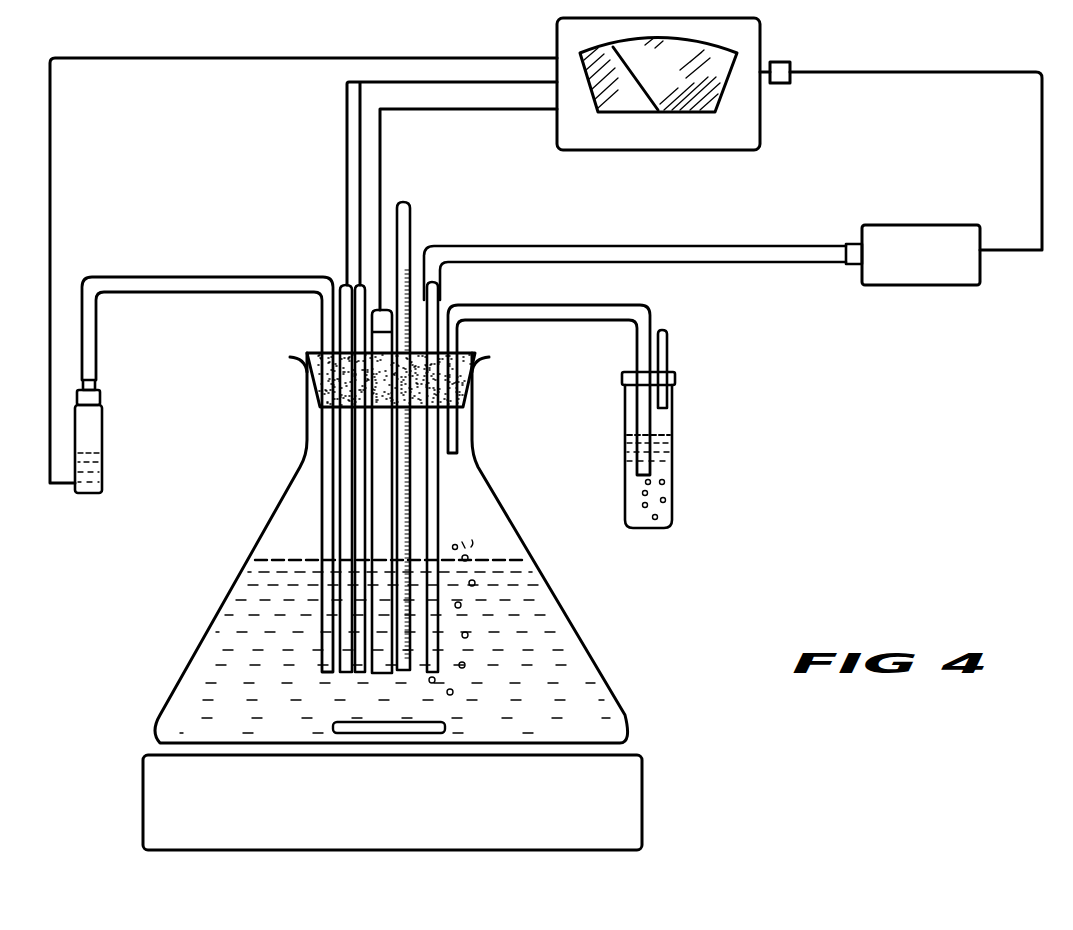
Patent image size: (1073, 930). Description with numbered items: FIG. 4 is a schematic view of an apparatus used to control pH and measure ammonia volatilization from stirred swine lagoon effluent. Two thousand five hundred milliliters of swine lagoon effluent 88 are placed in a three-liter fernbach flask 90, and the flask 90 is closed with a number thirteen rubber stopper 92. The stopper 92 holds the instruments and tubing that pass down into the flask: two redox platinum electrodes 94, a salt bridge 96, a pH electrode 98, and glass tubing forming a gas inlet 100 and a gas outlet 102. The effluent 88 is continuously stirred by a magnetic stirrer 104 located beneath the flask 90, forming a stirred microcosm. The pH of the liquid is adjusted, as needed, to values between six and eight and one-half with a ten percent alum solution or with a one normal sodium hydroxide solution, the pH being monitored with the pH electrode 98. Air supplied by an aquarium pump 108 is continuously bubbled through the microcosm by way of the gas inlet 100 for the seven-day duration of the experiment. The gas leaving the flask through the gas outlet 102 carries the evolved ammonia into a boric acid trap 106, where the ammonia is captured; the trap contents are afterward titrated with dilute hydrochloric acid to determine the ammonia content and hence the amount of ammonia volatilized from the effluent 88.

The swine lagoon effluent 88 is at (492, 645).
The fernbach flask 90 is at (507, 513).
The rubber stopper 92 is at (312, 352).
The redox (Pt) electrode 94 is at (347, 527).
The salt bridge 96 is at (325, 678).
The pH electrode 98 is at (380, 490).
The glass tubing gas inlet 100 is at (428, 275).
The glass tubing gas outlet 102 is at (452, 333).
The magnetic stirrer 104 is at (628, 780).
The boric acid trap 106 is at (676, 460).
The aquarium pump 108 is at (918, 270).